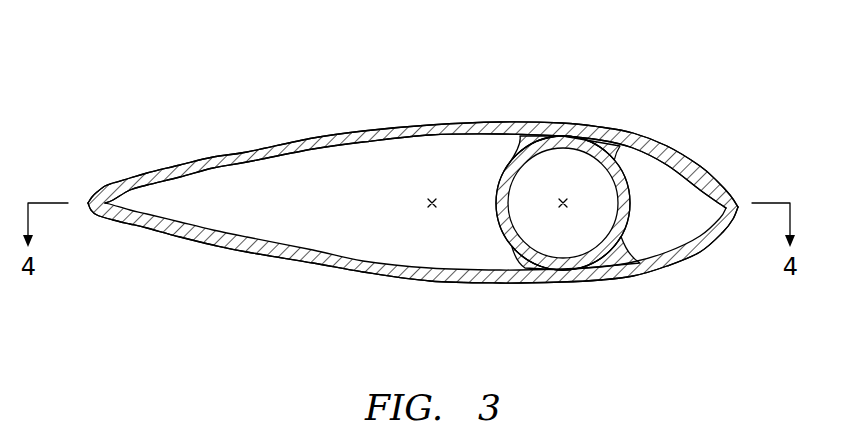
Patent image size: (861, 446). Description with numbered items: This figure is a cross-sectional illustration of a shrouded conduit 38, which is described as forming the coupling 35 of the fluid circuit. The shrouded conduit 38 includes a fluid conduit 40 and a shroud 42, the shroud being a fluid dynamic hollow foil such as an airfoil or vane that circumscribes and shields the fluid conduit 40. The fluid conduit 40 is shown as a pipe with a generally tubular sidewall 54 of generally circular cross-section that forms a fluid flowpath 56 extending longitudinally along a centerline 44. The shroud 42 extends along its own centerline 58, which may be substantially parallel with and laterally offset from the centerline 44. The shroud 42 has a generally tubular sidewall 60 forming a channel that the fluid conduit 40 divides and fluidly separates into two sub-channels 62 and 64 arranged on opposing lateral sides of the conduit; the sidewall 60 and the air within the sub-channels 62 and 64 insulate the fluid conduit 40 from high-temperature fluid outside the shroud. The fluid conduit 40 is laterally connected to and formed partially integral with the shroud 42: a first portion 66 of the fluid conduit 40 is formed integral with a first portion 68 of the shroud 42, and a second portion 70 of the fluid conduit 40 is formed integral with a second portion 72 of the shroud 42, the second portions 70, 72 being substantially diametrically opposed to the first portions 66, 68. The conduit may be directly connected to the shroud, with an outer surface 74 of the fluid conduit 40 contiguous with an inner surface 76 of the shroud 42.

The shrouded conduit 38 is at (447, 152).
The coupling 35 is at (447, 152).
The sidewall 60 is at (340, 133).
The shroud 42 is at (345, 280).
The inner surface 76 is at (395, 143).
The centerline 58 is at (432, 212).
The sub-channel 62 is at (270, 217).
The sub-channel 64 is at (648, 233).
The fluid flowpath 56 is at (548, 187).
The outer surface 74 is at (497, 186).
The first portion 68 is at (563, 126).
The first portion 66 is at (589, 127).
The second portion 70 is at (560, 264).
The second portion 72 is at (580, 268).
The fluid conduit 40 is at (494, 243).
The centerline 44 is at (566, 208).
The sidewall 54 is at (627, 197).